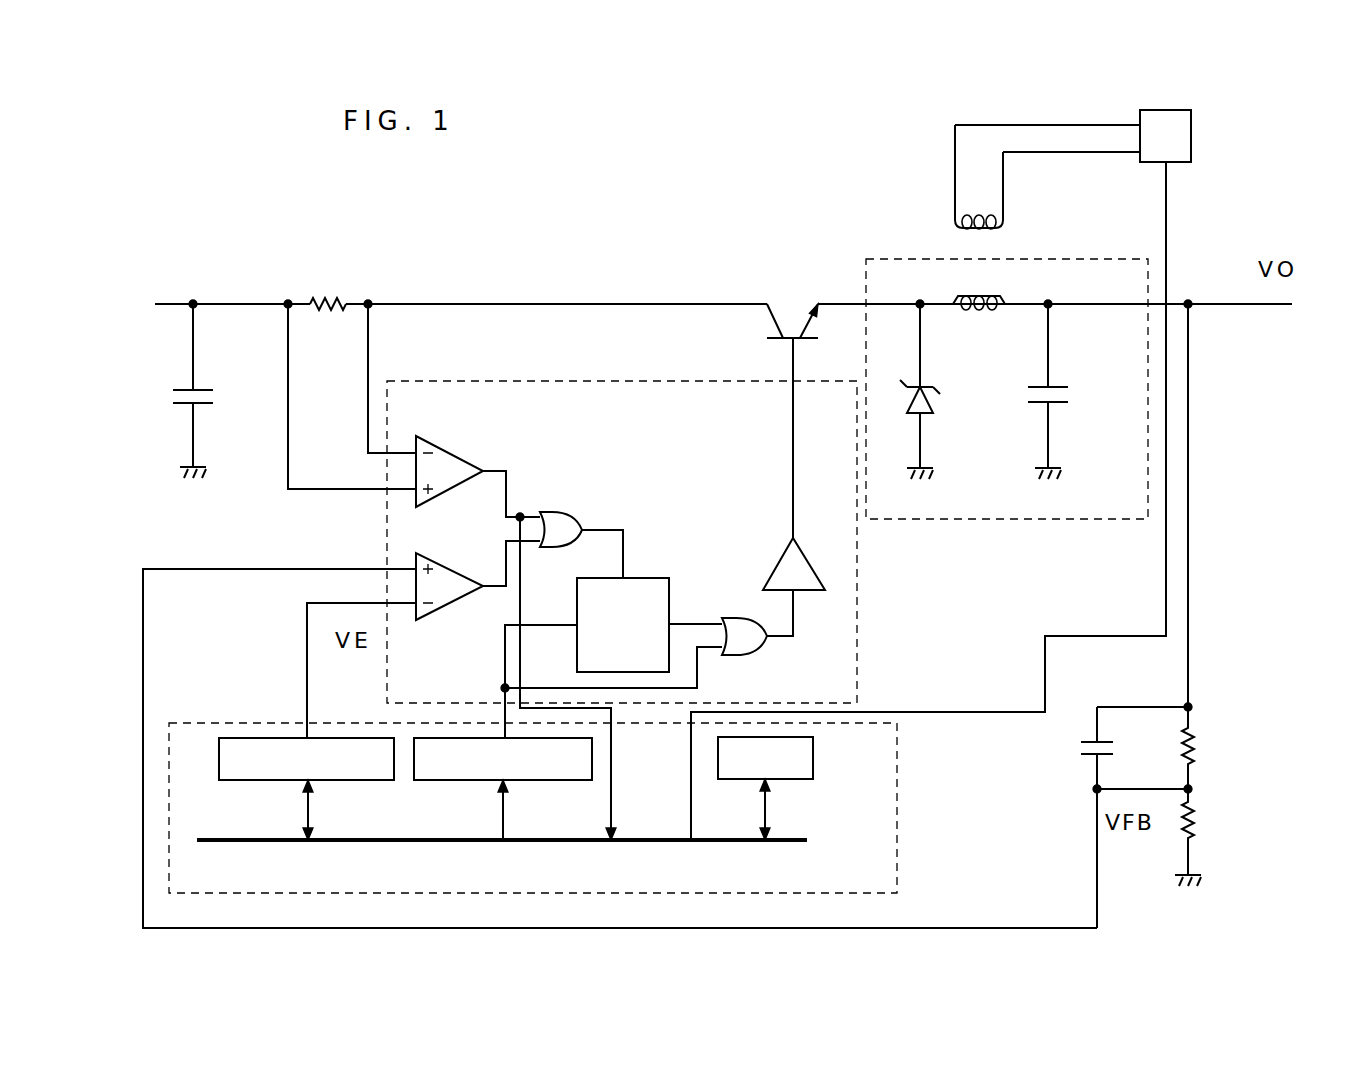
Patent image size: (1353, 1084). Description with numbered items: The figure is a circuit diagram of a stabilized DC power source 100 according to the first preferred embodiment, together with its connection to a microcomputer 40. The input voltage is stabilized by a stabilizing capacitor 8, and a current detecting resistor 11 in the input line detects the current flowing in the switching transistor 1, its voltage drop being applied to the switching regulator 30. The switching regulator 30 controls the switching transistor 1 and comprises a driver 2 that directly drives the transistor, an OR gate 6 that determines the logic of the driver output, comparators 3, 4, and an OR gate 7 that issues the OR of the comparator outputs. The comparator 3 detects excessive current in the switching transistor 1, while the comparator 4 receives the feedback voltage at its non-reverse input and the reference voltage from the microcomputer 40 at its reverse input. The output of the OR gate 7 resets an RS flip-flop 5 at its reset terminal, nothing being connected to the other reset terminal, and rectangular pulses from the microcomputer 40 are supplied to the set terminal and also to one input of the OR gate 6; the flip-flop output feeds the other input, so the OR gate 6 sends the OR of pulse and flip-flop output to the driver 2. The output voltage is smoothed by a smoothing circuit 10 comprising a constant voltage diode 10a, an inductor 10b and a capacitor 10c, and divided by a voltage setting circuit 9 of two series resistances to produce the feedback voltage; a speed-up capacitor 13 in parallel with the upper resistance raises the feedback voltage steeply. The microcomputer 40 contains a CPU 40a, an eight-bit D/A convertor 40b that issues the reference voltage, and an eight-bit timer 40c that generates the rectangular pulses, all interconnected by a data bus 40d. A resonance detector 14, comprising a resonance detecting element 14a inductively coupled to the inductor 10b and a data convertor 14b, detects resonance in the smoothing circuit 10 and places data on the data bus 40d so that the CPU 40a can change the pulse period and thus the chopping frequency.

The switching transistor 1 is at (786, 300).
The driver 2 is at (815, 590).
The comparator 3 is at (430, 440).
The comparator 4 is at (428, 617).
The RS flip-flop 5 is at (661, 578).
The OR gate 6 is at (738, 618).
The OR gate 7 is at (553, 512).
The stabilizing capacitor 8 is at (172, 390).
The voltage setting circuit 9 is at (1265, 797).
The smoothing circuit 10 is at (958, 522).
The constant voltage diode 10a is at (940, 394).
The inductor 10b is at (975, 310).
The capacitor 10c is at (1055, 407).
The current detecting resistor 11 is at (328, 290).
The speed-up capacitor 13 is at (1077, 745).
The resonance detector 14 is at (1047, 101).
The resonance detecting element 14a is at (948, 200).
The data convertor 14b is at (1195, 122).
The switching regulator 30 is at (860, 588).
The microcomputer 40 is at (898, 805).
The CPU 40a is at (800, 780).
The 8-bit D/A convertor 40b is at (333, 780).
The 8-bit timer 40c is at (503, 780).
The data bus 40d is at (530, 840).
The stabilized DC power source 100 is at (797, 128).